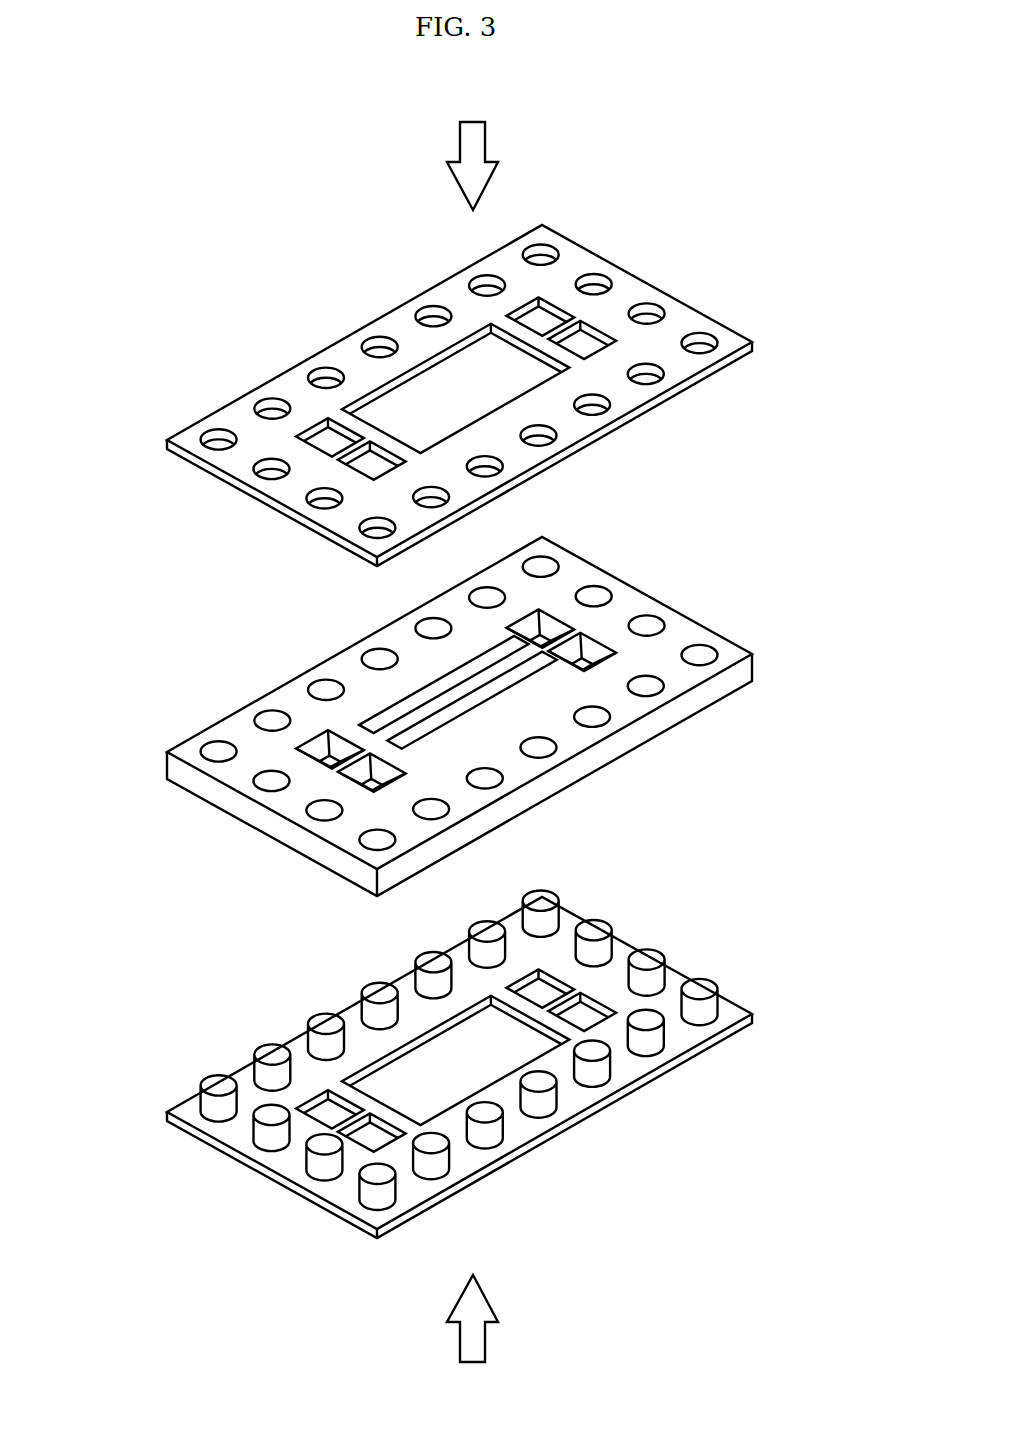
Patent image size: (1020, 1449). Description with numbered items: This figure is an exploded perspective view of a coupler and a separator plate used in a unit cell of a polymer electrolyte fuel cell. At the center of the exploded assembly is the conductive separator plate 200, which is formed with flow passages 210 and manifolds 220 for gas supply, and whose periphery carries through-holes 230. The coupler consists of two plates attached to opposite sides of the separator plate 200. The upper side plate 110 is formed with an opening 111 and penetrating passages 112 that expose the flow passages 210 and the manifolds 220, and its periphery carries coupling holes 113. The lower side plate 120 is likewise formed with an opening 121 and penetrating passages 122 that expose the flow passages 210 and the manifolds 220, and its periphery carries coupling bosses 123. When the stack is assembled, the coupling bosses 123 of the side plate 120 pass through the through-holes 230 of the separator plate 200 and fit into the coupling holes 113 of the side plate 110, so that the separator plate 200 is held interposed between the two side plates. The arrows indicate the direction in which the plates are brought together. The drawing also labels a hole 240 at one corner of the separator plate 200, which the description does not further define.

The side plate 110 is at (746, 341).
The opening 111 is at (457, 345).
The penetrating passages 112 is at (548, 300).
The coupling holes 113 is at (652, 312).
The side plate 120 is at (736, 1037).
The opening 121 is at (420, 1035).
The penetrating passages 122 is at (548, 985).
The coupling bosses 123 is at (713, 1010).
The separator plate 200 is at (754, 658).
The flow passages 210 is at (407, 697).
The manifolds 220 is at (553, 627).
The through-holes 230 is at (650, 626).
The corner alignment hole of middle plate 240 is at (217, 746).